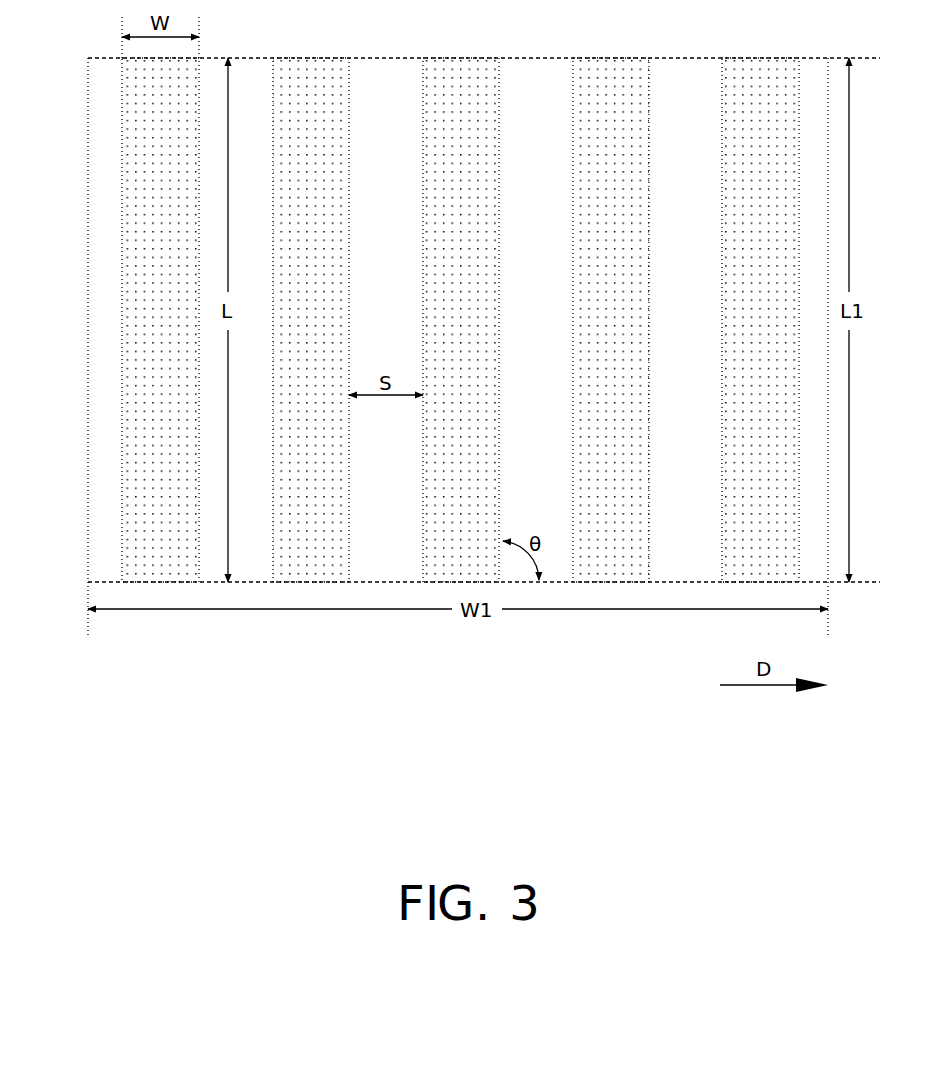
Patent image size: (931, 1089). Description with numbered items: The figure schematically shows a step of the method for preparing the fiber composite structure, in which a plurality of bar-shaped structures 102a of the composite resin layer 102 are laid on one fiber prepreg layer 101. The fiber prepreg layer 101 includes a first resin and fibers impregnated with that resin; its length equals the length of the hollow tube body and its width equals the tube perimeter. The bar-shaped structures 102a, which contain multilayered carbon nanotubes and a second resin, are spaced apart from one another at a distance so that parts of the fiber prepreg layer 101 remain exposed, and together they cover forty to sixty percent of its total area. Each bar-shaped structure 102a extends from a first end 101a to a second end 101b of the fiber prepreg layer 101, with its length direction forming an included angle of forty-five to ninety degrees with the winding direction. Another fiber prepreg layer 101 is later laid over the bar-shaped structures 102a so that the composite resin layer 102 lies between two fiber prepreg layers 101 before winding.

The fiber prepreg layer 101 is at (548, 98).
The first end 101a is at (108, 58).
The second end 101b is at (108, 582).
The composite resin layer 102 is at (460, 320).
The bar-shaped structure 102a is at (590, 68).